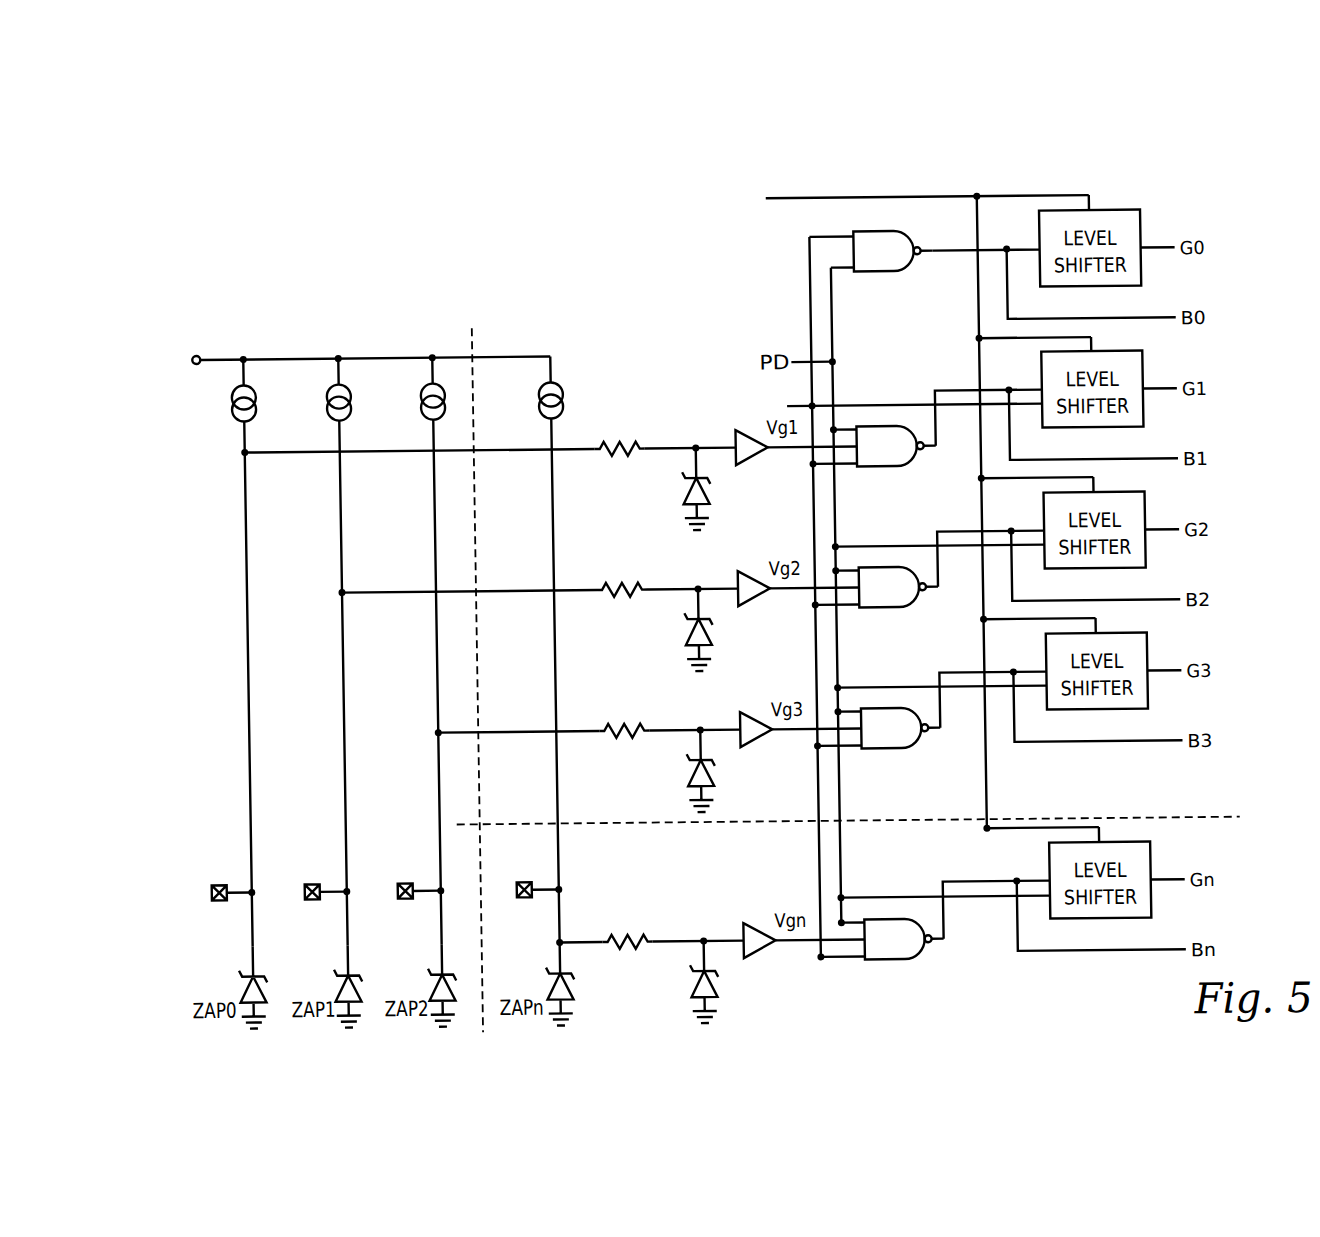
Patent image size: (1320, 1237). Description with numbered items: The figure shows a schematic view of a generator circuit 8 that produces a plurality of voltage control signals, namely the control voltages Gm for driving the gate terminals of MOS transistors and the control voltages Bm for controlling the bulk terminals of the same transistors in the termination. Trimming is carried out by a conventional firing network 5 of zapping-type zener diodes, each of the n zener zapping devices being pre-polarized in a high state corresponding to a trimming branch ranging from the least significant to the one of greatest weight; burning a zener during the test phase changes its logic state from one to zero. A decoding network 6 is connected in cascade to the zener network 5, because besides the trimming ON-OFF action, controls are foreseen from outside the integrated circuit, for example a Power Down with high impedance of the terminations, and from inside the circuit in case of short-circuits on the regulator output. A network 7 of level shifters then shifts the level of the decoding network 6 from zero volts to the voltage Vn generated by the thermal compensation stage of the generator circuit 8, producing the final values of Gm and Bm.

The zener ZAP network 5 is at (418, 336).
The decoding network 6 is at (915, 332).
The level shifter network 7 is at (1112, 205).
The generator circuit 8 is at (709, 207).